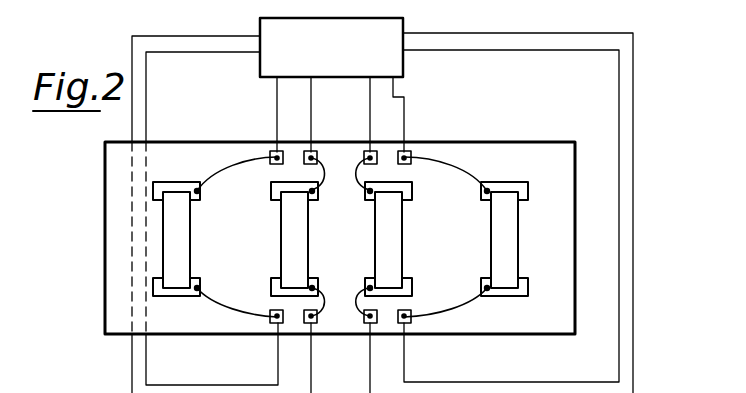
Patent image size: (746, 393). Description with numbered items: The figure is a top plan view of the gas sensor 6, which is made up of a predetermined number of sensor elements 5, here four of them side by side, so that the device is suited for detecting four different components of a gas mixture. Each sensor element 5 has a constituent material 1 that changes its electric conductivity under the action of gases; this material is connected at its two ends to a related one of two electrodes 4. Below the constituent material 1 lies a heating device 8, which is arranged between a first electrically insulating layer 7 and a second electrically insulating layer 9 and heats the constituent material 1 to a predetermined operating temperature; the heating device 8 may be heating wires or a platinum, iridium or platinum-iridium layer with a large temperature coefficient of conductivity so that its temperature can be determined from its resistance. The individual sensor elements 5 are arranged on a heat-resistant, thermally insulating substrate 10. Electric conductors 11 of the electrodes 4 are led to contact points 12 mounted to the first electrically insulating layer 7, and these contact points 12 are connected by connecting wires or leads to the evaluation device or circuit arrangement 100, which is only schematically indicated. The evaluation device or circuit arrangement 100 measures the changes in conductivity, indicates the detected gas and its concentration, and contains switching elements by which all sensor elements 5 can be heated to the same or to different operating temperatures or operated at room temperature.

The constituent material 1 is at (505, 240).
The electrodes 4 is at (503, 184).
The sensor element 5 is at (370, 195).
The gas sensor 6 is at (667, 230).
The first electrically insulating layer 7 is at (346, 262).
The heating device 8 is at (346, 262).
The second electrically insulating layer 9 is at (346, 262).
The substrate 10 is at (503, 315).
The electric conductors 11 is at (238, 318).
The contact points 12 is at (279, 155).
The evaluation device or circuit arrangement 100 is at (301, 53).